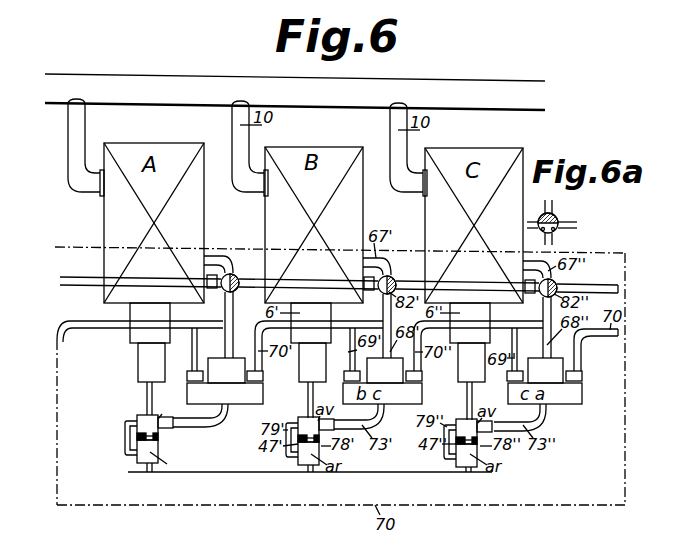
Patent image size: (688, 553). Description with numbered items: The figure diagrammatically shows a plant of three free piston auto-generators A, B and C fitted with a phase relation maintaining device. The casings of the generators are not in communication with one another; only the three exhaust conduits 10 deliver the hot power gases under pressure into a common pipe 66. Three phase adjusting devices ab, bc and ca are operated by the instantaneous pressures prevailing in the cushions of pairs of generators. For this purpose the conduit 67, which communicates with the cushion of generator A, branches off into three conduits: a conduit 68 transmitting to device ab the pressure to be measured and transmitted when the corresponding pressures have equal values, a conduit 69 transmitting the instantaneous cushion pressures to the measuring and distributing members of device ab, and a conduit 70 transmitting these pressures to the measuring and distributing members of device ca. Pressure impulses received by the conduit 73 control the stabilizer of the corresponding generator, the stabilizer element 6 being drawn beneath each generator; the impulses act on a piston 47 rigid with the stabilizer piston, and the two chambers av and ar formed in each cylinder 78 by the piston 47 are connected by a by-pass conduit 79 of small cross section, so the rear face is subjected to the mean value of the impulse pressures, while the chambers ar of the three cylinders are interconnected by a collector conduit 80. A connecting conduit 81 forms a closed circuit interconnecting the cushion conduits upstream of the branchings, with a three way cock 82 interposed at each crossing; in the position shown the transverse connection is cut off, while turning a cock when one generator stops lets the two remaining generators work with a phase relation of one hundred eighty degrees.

In FIG. 6, the common pipe 66 is at (214, 80).
In FIG. 6, the exhaust conduit 10 is at (77, 123).
In FIG. 6, the connecting conduit 81 is at (82, 277).
In FIG. 6, the conduit 67 is at (216, 256).
In FIG. 6, the three way cock 82 is at (230, 290).
In FIG. 6A, the three way cock 82 is at (554, 217).
In FIG. 6, the conduit 68 is at (228, 352).
In FIG. 6, the conduit 69 is at (188, 340).
In FIG. 6, the conduit 70 is at (93, 329).
In FIG. 6, the pedestal 6 is at (140, 313).
In FIG. 6, the conduit 73 is at (200, 423).
In FIG. 6, the cylinder 78 is at (160, 447).
In FIG. 6, the by-pass conduit 79 is at (126, 430).
In FIG. 6, the piston 47 is at (137, 443).
In FIG. 6, the collector conduit 80 is at (275, 473).